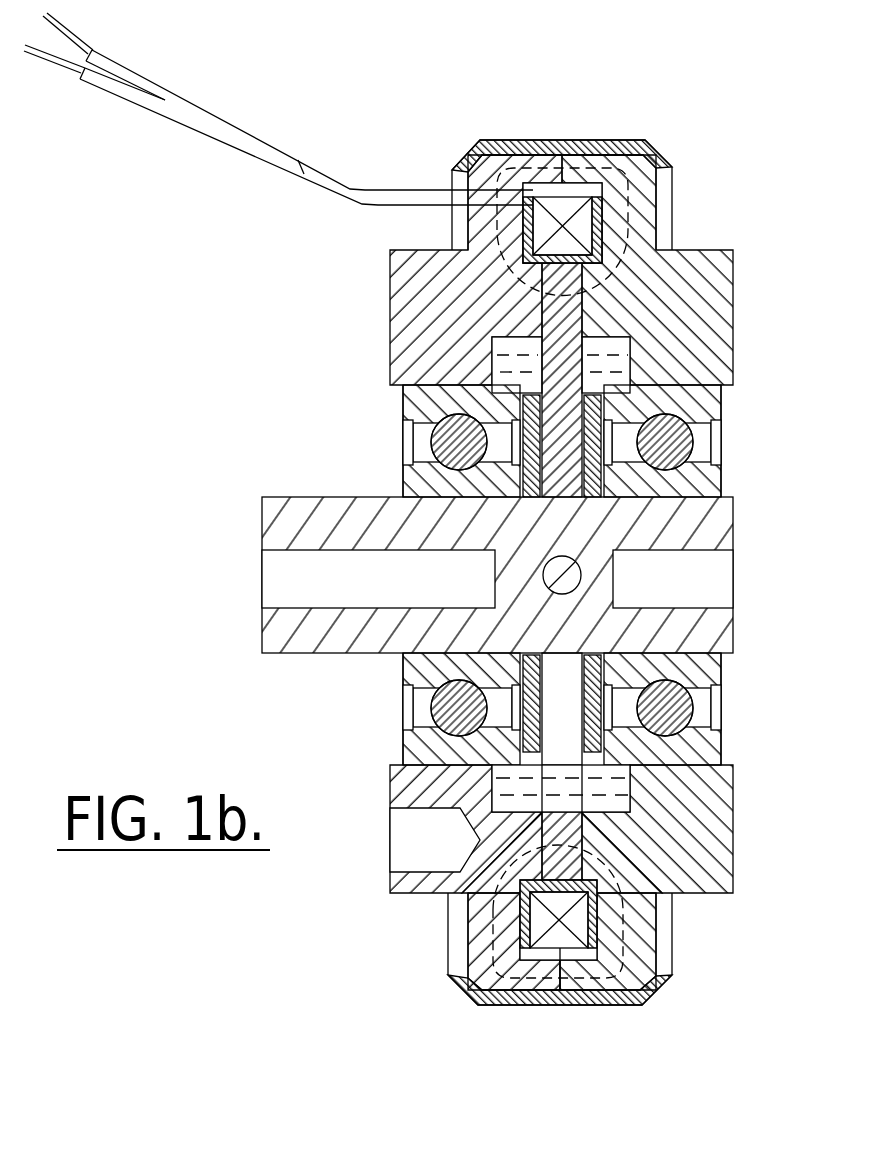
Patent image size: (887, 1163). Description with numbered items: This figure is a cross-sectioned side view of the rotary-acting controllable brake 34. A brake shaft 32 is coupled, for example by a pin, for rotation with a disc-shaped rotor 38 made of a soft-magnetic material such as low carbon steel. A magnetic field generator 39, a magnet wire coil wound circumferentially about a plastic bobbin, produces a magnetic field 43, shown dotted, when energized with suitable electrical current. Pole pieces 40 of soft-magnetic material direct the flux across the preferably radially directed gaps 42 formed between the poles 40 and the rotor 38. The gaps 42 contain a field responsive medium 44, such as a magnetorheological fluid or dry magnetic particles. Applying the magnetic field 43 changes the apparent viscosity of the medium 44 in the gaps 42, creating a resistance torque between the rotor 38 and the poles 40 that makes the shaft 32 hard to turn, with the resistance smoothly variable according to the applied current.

The brake shaft 32 is at (330, 635).
The rotary-acting controllable brake 34 is at (740, 318).
The rotor 38 is at (560, 332).
The magnetic field generator 39 is at (540, 222).
The pole pieces 40 is at (460, 285).
The gaps 42 is at (592, 845).
The magnetic field 43 is at (632, 931).
The field responsive medium 44 is at (612, 782).